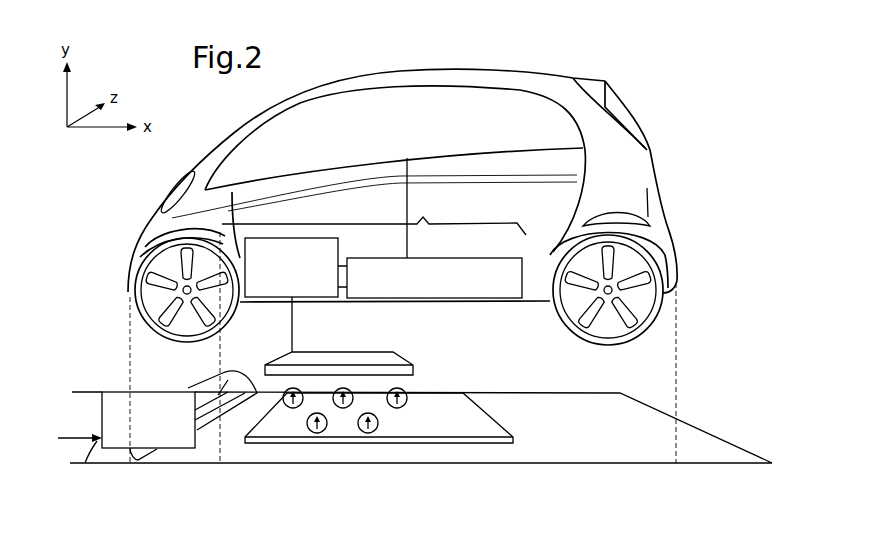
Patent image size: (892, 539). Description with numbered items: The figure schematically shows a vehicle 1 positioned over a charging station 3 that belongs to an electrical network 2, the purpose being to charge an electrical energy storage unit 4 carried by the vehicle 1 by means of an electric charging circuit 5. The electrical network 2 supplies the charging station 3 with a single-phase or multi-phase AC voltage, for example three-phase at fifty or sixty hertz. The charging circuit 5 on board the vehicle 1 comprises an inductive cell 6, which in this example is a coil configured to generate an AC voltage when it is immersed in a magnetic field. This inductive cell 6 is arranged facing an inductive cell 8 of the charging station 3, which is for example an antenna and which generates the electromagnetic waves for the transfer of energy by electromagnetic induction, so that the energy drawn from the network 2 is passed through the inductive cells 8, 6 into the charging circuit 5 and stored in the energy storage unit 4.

The vehicle 1 is at (546, 74).
The electrical network 2 is at (96, 437).
The charging station 3 is at (158, 429).
The electrical energy storage unit 4 is at (448, 289).
The electric charging circuit 5 is at (374, 214).
The inductive cell 6 is at (381, 355).
The inductive cell 8 is at (292, 424).